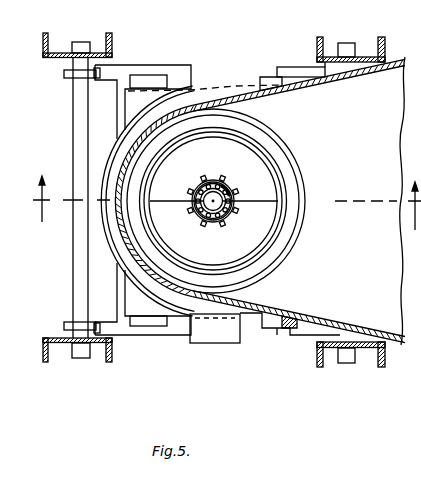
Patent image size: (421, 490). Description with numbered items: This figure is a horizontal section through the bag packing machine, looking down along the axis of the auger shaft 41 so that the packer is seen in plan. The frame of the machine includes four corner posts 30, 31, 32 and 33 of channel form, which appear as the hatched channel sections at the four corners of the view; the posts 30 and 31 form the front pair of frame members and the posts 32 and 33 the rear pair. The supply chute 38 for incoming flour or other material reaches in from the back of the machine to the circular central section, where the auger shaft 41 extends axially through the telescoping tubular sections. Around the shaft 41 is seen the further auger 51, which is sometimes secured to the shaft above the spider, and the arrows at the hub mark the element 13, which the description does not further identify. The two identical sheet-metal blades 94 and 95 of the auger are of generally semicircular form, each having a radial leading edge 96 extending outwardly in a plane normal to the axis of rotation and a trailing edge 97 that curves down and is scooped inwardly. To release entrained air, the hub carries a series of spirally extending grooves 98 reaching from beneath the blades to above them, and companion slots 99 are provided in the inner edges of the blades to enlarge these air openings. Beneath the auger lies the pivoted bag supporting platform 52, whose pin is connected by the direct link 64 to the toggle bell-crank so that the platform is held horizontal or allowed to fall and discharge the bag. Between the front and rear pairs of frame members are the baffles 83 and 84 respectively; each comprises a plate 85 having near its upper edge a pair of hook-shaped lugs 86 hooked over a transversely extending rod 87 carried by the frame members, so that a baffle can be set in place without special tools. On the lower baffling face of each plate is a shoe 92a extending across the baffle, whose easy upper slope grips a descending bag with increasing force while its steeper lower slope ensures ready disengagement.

The corner post 30 is at (53, 22).
The corner post 31 is at (46, 363).
The corner post 32 is at (318, 368).
The corner post 33 is at (380, 37).
The supply chute 38 is at (225, 201).
The auger shaft 41 is at (232, 184).
The further auger 51 is at (245, 240).
The bag supporting platform 52 is at (172, 317).
The direct link 64 is at (288, 330).
The baffle 83 is at (117, 292).
The baffle 84 is at (300, 336).
The plate 85 is at (307, 72).
The hook-shaped lugs 86 is at (64, 74).
The transversely extending rod 87 is at (80, 127).
The shoe 92a is at (268, 82).
The blade 94 is at (221, 223).
The blade 95 is at (217, 181).
The radial leading edge 96 is at (257, 200).
The trailing edge 97 is at (165, 195).
The spirally extending grooves 98 is at (224, 178).
The slots 99 is at (229, 178).
The shaft 13 is at (158, 190).